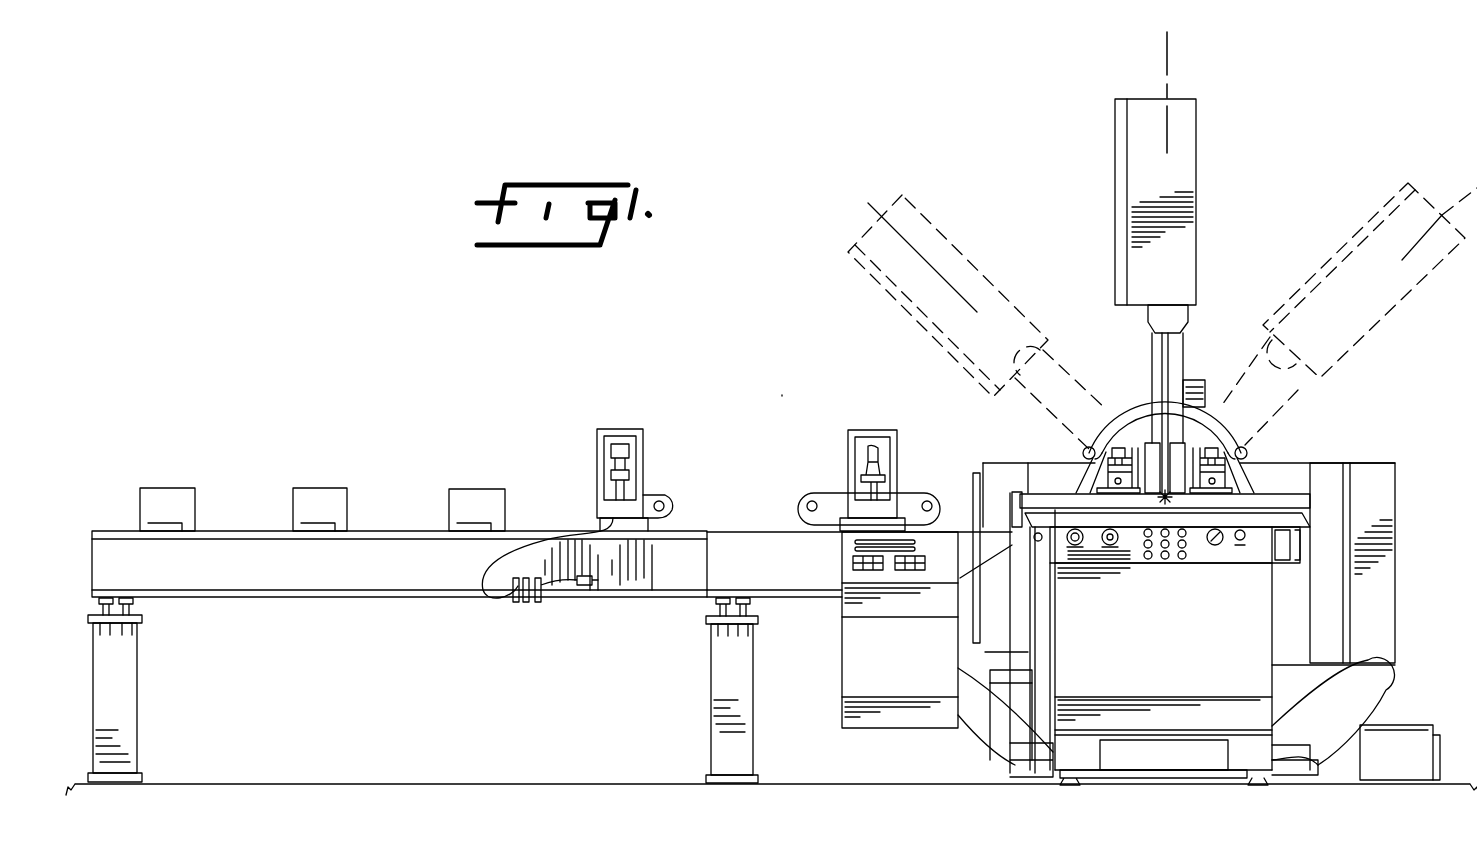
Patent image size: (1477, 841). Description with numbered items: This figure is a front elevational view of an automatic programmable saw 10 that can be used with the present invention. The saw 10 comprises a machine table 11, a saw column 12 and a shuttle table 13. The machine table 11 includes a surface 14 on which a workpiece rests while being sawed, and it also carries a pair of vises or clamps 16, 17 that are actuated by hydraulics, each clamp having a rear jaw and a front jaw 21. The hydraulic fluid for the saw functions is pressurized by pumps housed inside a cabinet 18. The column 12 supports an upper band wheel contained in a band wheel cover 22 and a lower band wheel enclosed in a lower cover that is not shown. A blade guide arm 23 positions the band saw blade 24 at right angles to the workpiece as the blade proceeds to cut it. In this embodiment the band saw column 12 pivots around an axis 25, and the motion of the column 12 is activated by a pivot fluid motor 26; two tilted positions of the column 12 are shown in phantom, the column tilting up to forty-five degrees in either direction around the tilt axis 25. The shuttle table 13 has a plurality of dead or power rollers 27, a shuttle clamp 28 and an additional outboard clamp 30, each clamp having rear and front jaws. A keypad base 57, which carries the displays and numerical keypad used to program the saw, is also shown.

The saw 10 is at (782, 395).
The machine table 11 is at (1317, 485).
The saw column 12 is at (1186, 345).
The shuttle table 13 is at (402, 530).
The surface 14 is at (1272, 494).
The clamp 16 is at (1248, 433).
The clamp 17 is at (1087, 448).
The cabinet 18 is at (1334, 579).
The front jaw 21 is at (1186, 445).
The band wheel cover 22 is at (1190, 180).
The blade guide arm 23 is at (1148, 318).
The band saw blade 24 is at (1160, 353).
The axis 25 is at (1166, 500).
The pivot fluid motor 26 is at (1200, 380).
The rollers 27 is at (300, 493).
The shuttle clamp 28 is at (884, 422).
The outboard clamp 30 is at (622, 427).
The keypad base 57 is at (840, 566).